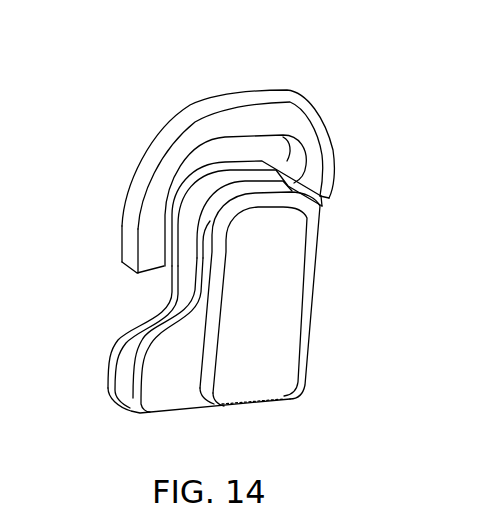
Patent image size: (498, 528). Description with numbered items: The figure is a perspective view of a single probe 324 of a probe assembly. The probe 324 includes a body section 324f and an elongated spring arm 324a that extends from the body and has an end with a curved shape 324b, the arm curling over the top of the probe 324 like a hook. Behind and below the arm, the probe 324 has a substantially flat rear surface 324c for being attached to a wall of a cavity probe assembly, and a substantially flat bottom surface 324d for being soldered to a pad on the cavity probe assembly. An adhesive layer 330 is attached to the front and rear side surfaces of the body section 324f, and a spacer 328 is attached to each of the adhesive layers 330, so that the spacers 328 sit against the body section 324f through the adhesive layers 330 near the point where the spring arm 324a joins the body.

The probe 324 is at (425, 150).
The elongated spring arm 324a is at (236, 91).
The curved shape 324b is at (128, 186).
The substantially flat rear surface 324c is at (313, 300).
The substantially flat bottom surface 324d is at (255, 405).
The body section 324f is at (177, 299).
The spacer 328 is at (322, 206).
The adhesive layer 330 is at (321, 196).